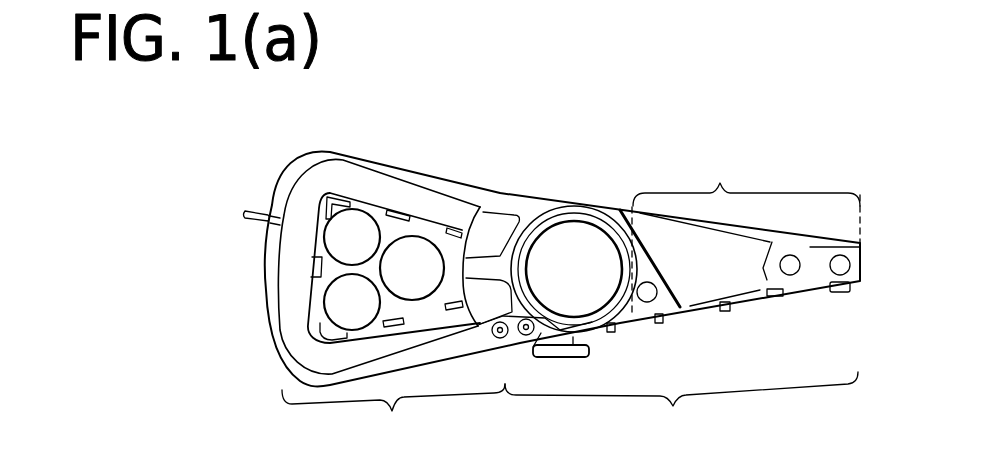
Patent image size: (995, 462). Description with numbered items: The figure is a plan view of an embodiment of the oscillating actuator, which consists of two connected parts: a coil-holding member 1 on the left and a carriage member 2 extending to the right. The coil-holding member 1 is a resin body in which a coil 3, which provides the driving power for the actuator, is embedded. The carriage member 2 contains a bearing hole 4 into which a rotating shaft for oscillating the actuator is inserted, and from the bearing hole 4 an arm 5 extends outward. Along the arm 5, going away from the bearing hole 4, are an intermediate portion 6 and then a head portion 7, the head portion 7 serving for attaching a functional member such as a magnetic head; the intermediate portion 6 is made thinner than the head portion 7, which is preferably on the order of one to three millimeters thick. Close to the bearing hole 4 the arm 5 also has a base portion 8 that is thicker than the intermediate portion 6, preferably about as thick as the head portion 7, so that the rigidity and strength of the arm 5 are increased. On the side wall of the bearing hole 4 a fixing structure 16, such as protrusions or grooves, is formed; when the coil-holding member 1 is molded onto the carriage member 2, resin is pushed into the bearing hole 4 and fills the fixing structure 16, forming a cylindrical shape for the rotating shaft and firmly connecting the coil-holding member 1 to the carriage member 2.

The coil-holding member 1 is at (552, 305).
The carriage member 2 is at (682, 326).
The coil 3 is at (333, 173).
The bearing hole 4 is at (582, 293).
The arm 5 is at (746, 172).
The intermediate portion 6 is at (720, 277).
The head portion 7 is at (793, 282).
The base portion 8 is at (644, 305).
The fixing structure 16 is at (575, 212).